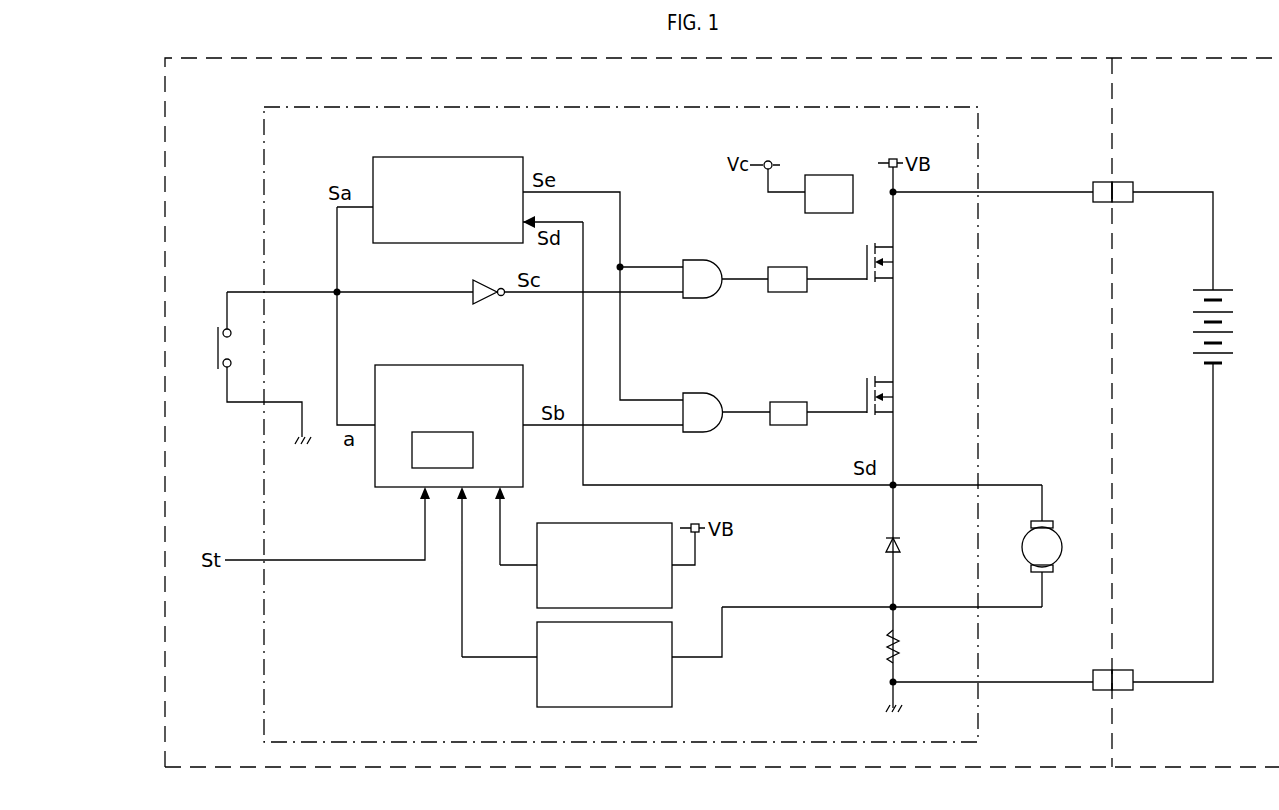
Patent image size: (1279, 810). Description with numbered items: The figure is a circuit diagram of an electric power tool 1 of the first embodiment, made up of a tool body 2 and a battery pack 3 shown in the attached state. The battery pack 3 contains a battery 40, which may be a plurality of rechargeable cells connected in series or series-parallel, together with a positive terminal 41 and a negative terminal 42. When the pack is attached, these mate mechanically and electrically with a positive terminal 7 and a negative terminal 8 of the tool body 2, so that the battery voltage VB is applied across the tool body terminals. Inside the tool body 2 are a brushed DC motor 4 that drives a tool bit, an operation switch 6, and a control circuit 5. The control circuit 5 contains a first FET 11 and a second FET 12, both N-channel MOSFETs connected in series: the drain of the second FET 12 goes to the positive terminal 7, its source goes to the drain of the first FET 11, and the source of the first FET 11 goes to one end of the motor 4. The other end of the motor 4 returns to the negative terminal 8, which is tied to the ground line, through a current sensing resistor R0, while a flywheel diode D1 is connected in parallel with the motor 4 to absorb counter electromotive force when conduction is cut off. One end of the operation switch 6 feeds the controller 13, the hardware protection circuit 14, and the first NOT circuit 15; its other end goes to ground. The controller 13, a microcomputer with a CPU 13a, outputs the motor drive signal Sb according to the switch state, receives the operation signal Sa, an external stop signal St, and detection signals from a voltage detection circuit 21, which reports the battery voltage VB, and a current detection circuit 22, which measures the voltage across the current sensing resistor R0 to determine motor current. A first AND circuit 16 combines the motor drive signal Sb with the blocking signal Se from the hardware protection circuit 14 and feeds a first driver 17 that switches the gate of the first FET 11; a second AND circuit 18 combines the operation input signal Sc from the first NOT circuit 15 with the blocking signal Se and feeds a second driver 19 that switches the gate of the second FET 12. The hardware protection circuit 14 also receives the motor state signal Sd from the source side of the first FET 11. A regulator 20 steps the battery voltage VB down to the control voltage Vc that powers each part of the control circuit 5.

The electric power tool 1 is at (200, 50).
The tool body 2 is at (840, 58).
The battery pack 3 is at (1205, 58).
The motor 4 is at (1062, 538).
The control circuit 5 is at (978, 147).
The operation switch 6 is at (218, 346).
The positive terminal 7 is at (1100, 182).
The negative terminal 8 is at (1102, 670).
The first FET 11 is at (895, 396).
The second FET 12 is at (895, 261).
The controller 13 is at (417, 365).
The CPU 13a is at (473, 450).
The hardware protection circuit 14 is at (466, 157).
The first NOT circuit 15 is at (486, 303).
The first AND circuit 16 is at (700, 393).
The first driver 17 is at (786, 402).
The second AND circuit 18 is at (700, 260).
The second driver 19 is at (786, 267).
The regulator 20 is at (826, 175).
The voltage detection circuit 21 is at (565, 523).
The current detection circuit 22 is at (548, 707).
The battery 40 is at (1232, 306).
The positive terminal 41 is at (1125, 182).
The negative terminal 42 is at (1127, 670).
The diode D1 is at (897, 546).
The current sensing resistor R0 is at (897, 645).